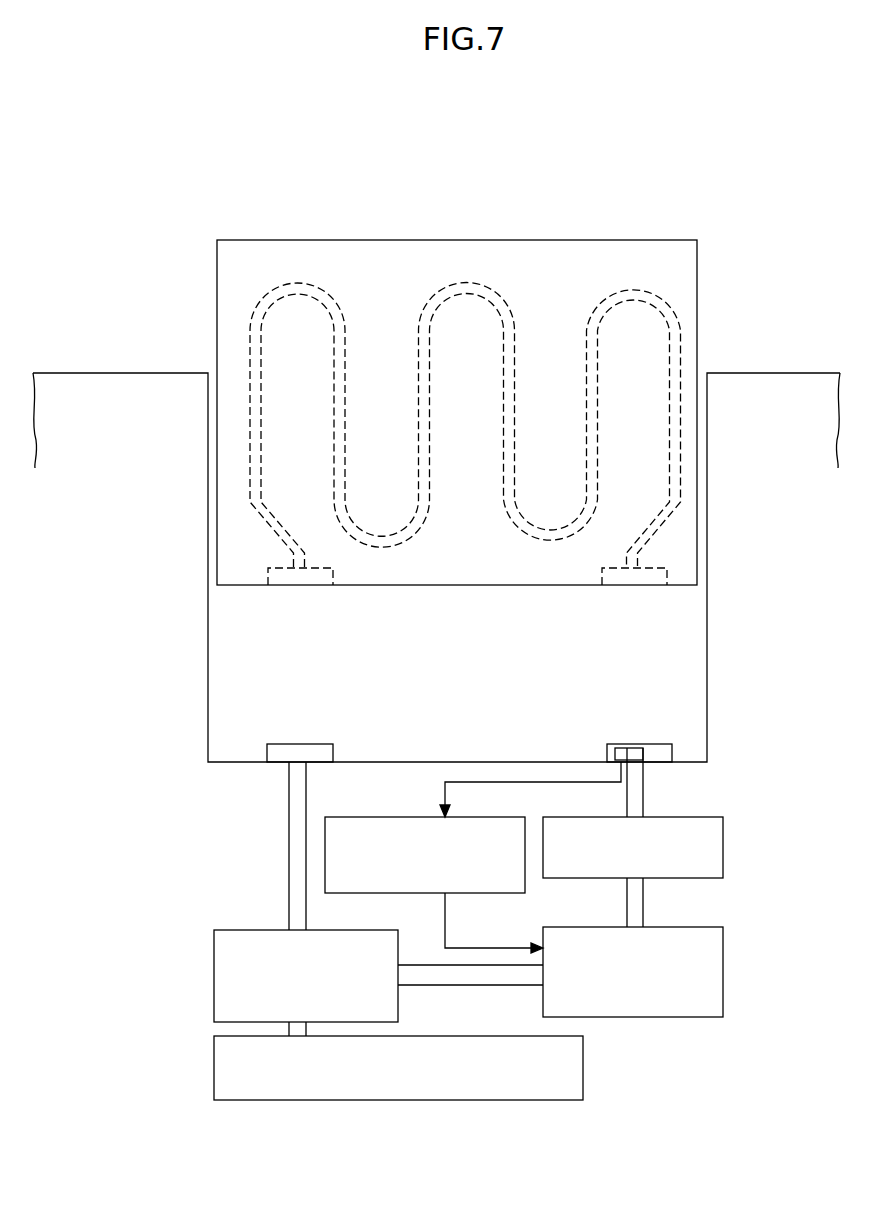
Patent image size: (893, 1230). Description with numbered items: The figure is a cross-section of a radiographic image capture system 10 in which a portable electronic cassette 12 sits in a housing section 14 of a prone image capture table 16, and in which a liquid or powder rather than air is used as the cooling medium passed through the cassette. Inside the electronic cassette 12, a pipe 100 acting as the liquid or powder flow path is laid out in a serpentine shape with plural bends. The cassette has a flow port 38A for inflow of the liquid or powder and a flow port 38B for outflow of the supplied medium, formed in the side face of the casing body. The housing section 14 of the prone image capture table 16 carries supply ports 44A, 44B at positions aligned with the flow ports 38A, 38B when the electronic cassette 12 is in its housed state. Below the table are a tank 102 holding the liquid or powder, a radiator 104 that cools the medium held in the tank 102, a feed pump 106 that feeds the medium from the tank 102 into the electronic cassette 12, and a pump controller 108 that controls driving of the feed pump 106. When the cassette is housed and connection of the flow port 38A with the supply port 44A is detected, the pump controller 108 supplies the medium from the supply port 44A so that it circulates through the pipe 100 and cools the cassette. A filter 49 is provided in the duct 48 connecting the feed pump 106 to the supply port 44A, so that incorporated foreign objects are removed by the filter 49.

The radiographic image capture system 10 is at (667, 165).
The electronic cassette 12 is at (541, 240).
The housing section 14 is at (478, 674).
The prone image capture table 16 is at (760, 395).
The pipe 100 is at (347, 337).
The flow port 38A is at (608, 567).
The flow port 38B is at (322, 567).
The supply port 44A is at (657, 744).
The supply port 44B is at (318, 744).
The duct 48 is at (645, 795).
The filter 49 is at (723, 845).
The tank 102 is at (245, 930).
The radiator 104 is at (268, 1100).
The feed pump 106 is at (723, 970).
The pump controller 108 is at (400, 817).